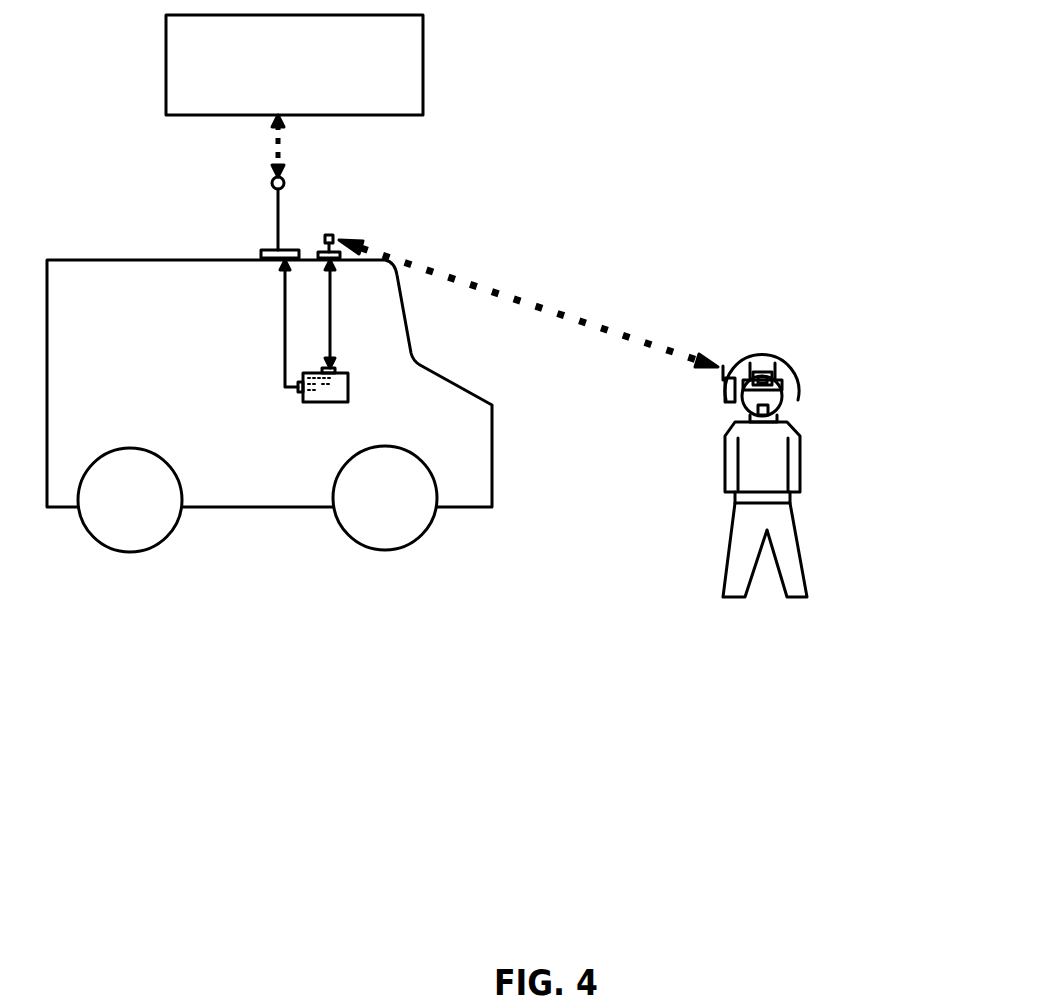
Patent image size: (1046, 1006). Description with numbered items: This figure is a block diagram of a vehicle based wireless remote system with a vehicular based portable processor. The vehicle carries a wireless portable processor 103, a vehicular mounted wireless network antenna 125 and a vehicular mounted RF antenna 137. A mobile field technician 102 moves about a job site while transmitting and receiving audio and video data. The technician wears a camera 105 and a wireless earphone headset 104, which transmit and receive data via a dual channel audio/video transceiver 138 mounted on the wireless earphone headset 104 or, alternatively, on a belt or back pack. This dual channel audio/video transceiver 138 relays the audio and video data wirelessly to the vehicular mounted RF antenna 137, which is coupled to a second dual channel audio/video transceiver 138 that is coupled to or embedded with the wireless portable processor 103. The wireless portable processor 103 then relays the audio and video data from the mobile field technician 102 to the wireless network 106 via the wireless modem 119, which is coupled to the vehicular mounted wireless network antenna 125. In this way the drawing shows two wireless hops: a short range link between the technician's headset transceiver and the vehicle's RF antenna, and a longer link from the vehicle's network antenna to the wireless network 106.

The mobile field technician 102 is at (800, 476).
The wireless portable processor 103 is at (325, 403).
The wireless earphone headset 104 is at (766, 354).
The camera 105 is at (782, 384).
The wireless network 106 is at (423, 101).
The wireless modem 119 is at (286, 393).
The vehicular mounted wireless network antenna 125 is at (282, 214).
The vehicular mounted RF antenna 137 is at (340, 238).
The dual channel audio/video transceiver 138 is at (345, 373).